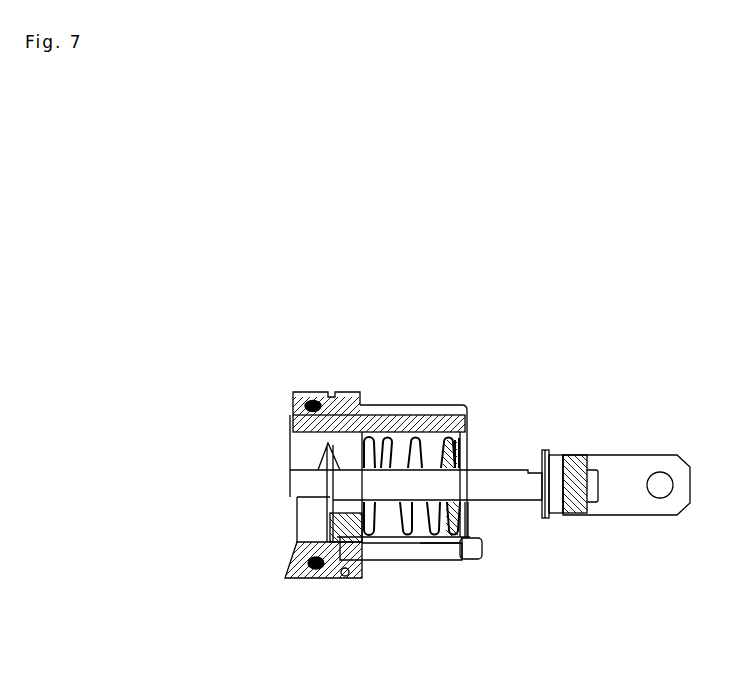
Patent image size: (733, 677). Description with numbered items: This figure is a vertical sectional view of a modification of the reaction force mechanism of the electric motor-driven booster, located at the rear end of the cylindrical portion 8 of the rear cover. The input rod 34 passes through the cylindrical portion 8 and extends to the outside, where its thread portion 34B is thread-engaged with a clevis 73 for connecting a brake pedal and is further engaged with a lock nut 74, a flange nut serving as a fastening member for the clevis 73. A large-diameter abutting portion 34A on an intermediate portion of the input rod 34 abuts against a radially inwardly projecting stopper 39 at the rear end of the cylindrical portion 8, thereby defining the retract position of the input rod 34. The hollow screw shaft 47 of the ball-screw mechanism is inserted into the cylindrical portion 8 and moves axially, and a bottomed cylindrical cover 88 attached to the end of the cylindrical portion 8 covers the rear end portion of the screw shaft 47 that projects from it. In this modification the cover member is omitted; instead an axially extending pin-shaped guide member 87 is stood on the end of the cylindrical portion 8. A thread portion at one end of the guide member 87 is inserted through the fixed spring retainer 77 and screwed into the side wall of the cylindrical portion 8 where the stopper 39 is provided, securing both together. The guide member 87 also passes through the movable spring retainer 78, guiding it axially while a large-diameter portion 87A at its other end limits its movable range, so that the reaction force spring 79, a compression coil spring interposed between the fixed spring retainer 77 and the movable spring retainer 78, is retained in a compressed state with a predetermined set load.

The cylindrical portion 8 is at (313, 392).
The screw shaft 47 is at (386, 424).
The bottomed cylindrical cover 88 is at (452, 405).
The input rod 34 is at (497, 480).
The large-diameter abutting portion 34A is at (310, 467).
The thread portion 34B is at (588, 458).
The stopper 39 is at (333, 540).
The clevis 73 is at (633, 483).
The lock nut 74 is at (546, 451).
The fixed spring retainer 77 is at (382, 563).
The movable spring retainer 78 is at (470, 518).
The reaction force spring 79 is at (398, 546).
The guide member 87 is at (438, 547).
The large-diameter portion 87A is at (476, 561).